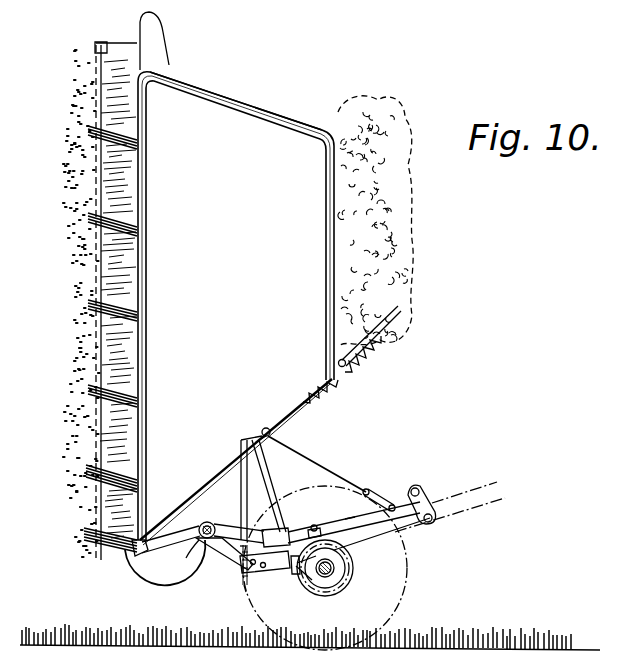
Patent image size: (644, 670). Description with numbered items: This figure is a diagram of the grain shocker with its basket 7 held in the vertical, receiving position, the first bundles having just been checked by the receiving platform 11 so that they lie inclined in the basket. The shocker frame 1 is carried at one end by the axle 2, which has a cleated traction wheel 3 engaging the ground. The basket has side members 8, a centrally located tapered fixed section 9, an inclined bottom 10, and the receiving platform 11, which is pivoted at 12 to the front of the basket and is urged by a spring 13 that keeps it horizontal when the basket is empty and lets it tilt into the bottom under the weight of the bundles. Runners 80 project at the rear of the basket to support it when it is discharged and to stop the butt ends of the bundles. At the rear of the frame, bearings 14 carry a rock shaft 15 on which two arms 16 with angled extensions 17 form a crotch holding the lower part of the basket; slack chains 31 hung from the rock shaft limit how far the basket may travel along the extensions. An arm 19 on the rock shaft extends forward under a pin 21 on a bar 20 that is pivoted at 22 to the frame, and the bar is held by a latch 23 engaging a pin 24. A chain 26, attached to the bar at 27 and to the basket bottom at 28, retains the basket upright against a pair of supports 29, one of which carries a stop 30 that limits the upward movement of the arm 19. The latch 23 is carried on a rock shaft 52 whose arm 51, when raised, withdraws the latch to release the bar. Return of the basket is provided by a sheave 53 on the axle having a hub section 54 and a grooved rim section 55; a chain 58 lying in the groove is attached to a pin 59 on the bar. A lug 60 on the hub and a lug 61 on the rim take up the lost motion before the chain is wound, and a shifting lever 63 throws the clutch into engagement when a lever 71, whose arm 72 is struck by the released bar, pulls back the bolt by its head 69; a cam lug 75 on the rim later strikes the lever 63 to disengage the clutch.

The frame of the shocker 1 is at (470, 508).
The axle 2 is at (345, 578).
The traction wheel 3 is at (400, 603).
The basket 7 is at (236, 308).
The side member 8 is at (232, 108).
The fixed section 9 is at (155, 42).
The inclined bottom 10 is at (295, 402).
The receiving platform 11 is at (388, 318).
The pivot 12 is at (338, 363).
The spring 13 is at (348, 377).
The bearing 14 is at (216, 548).
The rock shaft 15 is at (207, 521).
The arm 16 is at (133, 550).
The extension 17 is at (72, 505).
The arm 19 is at (230, 529).
The bar 20 is at (400, 536).
The pin 21 is at (314, 524).
The pivot 22 is at (243, 578).
The latch 23 is at (427, 486).
The pin 24 is at (414, 488).
The chain 26 is at (326, 468).
The attachment point 27 is at (389, 500).
The attachment point 28 is at (263, 427).
The support 29 is at (262, 447).
The stop 30 is at (249, 493).
The chain 31 is at (166, 586).
The arm 51 is at (327, 560).
The rock shaft 52 is at (425, 527).
The sheave 53 is at (325, 593).
The hub section 54 is at (343, 578).
The grooved rim section 55 is at (352, 592).
The chain 58 is at (357, 540).
The pin 59 is at (350, 521).
The lug 60 is at (291, 582).
The lug 61 is at (311, 582).
The lever 63 is at (272, 570).
The head 69 is at (242, 564).
The lever 71 is at (247, 586).
The arm 72 is at (247, 556).
The cam lug 75 is at (272, 527).
The runner 80 is at (105, 45).